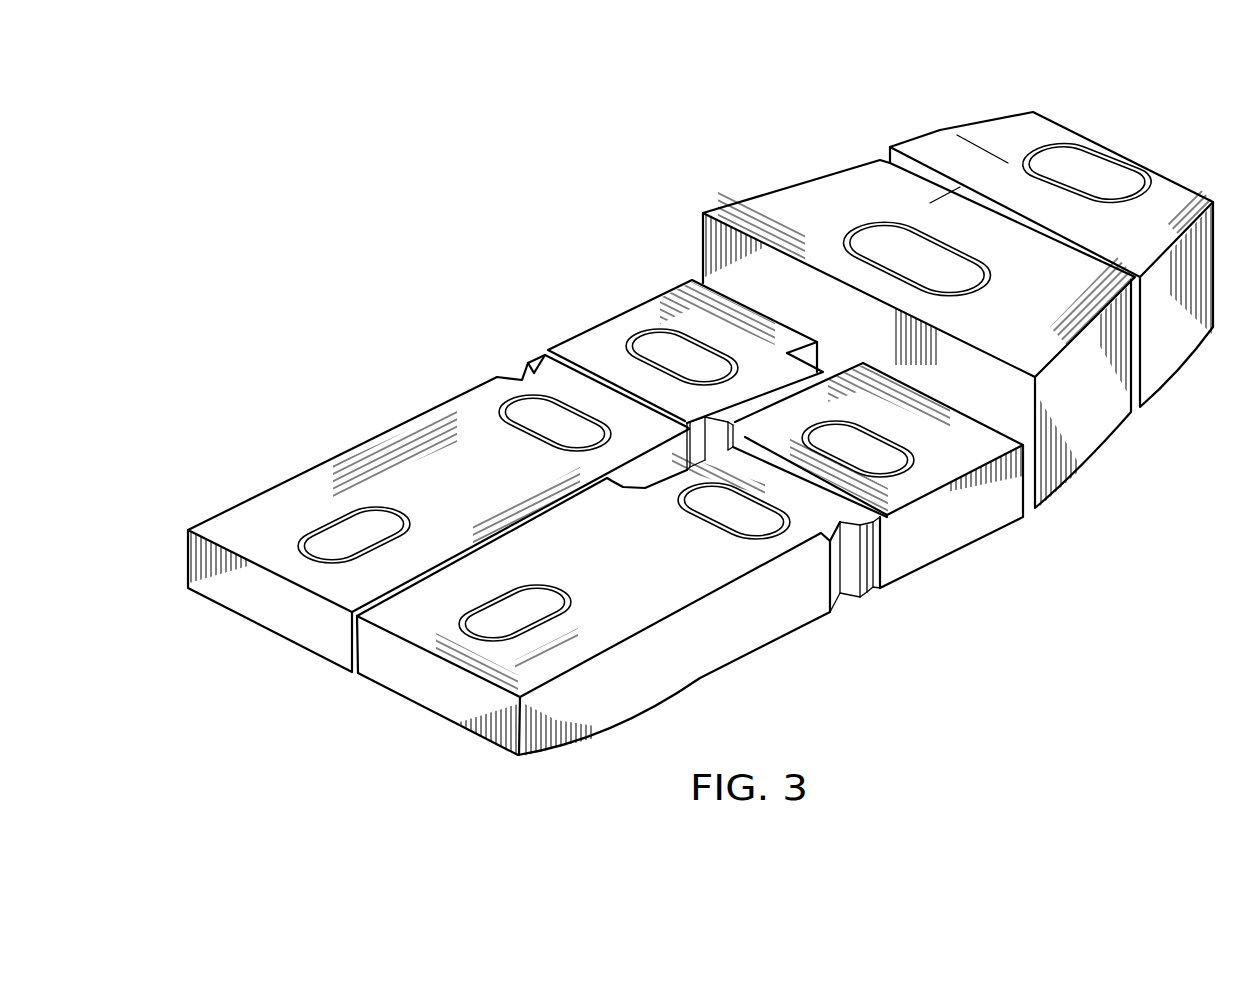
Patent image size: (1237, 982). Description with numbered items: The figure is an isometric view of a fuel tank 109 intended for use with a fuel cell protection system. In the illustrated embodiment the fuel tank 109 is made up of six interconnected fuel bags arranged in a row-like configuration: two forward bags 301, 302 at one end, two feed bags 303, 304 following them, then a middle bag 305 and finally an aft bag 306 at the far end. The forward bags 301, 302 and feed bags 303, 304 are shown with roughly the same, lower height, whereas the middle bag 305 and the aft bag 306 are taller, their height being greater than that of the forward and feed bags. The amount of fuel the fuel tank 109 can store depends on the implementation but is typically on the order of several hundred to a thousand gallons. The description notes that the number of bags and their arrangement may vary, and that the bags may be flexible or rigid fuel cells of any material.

The fuel tank 109 is at (491, 258).
The forward bag 301 is at (447, 417).
The forward bag 302 is at (690, 665).
The feed bag 303 is at (614, 325).
The feed bag 304 is at (957, 539).
The middle bag 305 is at (824, 190).
The aft bag 306 is at (1006, 133).